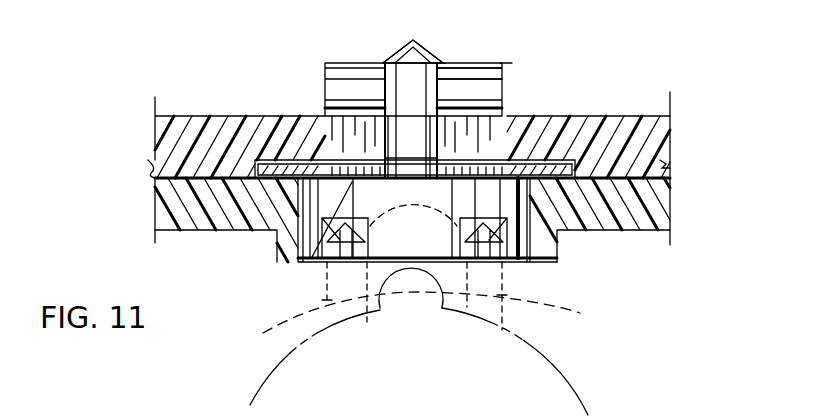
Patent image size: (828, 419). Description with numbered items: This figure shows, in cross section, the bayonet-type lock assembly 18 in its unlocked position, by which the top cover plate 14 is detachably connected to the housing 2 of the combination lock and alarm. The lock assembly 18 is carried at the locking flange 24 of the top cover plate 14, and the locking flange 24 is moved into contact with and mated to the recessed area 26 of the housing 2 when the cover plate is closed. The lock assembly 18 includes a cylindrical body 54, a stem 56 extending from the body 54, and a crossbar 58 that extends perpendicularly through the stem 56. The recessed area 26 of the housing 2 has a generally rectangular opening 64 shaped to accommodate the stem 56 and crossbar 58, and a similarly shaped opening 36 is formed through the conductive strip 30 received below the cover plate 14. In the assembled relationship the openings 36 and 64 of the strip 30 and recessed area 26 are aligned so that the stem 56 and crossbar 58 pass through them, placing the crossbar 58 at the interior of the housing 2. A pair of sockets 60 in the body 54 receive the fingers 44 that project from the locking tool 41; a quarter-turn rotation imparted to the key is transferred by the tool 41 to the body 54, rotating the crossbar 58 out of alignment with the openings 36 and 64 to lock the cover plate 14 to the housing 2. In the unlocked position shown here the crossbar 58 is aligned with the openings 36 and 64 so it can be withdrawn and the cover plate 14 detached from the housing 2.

The housing 2 is at (620, 115).
The top cover plate 14 is at (638, 231).
The lock assembly 18 is at (397, 42).
The locking flange 24 is at (220, 215).
The recessed area 26 is at (237, 128).
The conductive strip 30 is at (546, 163).
The opening 36 is at (297, 263).
The locking tool 41 is at (582, 398).
The fingers 44 is at (423, 320).
The cylindrical body 54 is at (555, 237).
The stem 56 is at (420, 56).
The crossbar 58 is at (482, 78).
The sockets 60 is at (414, 261).
The rectangular opening 64 is at (333, 140).